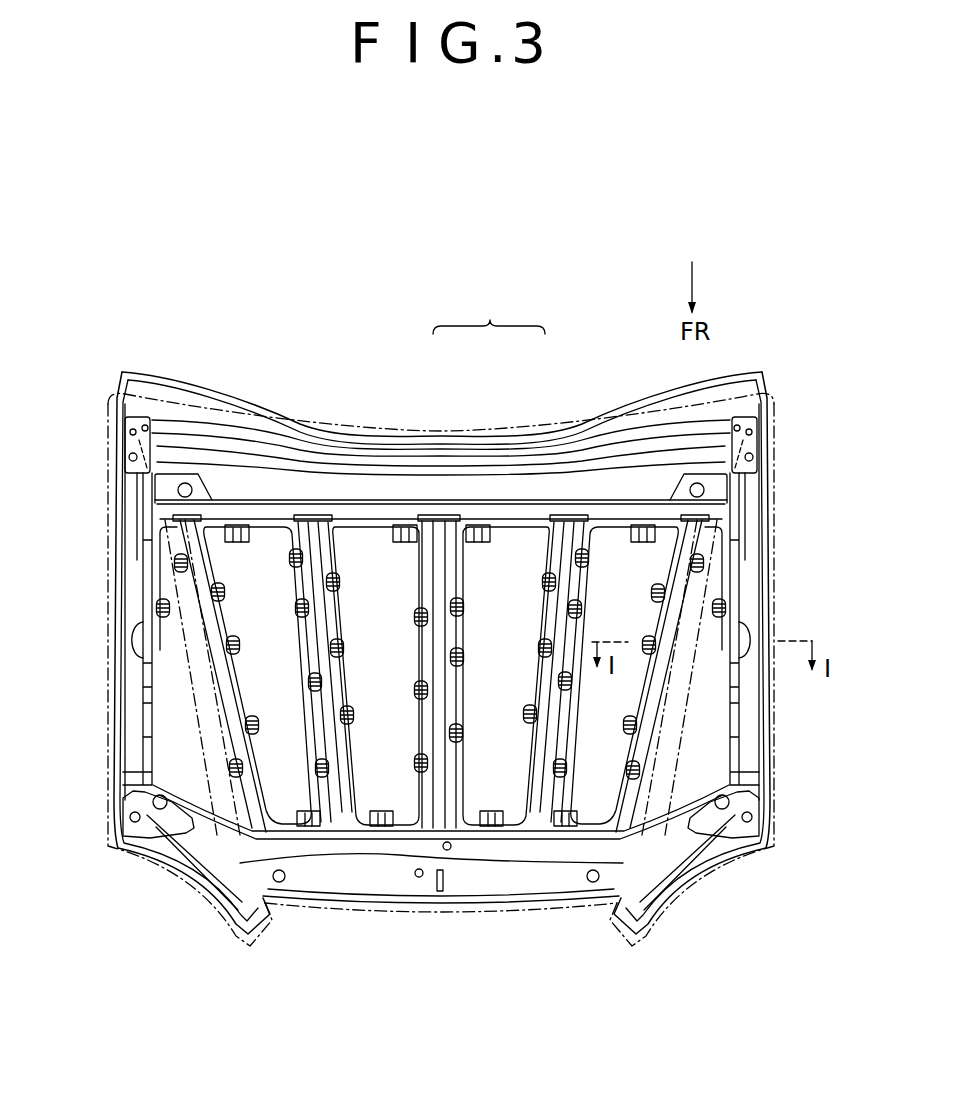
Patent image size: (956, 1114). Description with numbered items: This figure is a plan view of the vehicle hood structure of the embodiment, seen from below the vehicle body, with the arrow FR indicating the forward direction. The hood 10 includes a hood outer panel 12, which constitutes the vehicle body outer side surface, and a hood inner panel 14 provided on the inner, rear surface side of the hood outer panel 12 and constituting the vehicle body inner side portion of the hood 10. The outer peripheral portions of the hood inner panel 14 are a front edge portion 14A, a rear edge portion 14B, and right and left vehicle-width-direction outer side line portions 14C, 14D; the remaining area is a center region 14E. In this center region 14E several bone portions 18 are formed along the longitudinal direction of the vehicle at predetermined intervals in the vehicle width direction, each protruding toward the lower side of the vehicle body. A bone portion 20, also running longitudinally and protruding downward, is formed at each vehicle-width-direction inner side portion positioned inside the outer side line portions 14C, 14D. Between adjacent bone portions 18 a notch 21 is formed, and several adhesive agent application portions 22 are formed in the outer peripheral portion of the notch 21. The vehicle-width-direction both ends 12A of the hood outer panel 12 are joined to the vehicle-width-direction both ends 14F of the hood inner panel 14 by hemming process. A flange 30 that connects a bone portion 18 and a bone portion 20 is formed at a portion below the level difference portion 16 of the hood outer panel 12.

The hood 10 is at (489, 312).
The hood outer panel 12 is at (423, 428).
The vehicle-width-direction both ends of the hood outer panel 12A is at (105, 540).
The hood inner panel 14 is at (498, 431).
The front edge portion 14A is at (371, 885).
The rear edge portion 14B is at (385, 482).
The vehicle-width-direction outer side line portion 14C is at (130, 618).
The vehicle-width-direction outer side line portion 14D is at (745, 590).
The center region 14E is at (515, 557).
The vehicle-width-direction both ends of the hood inner panel 14F is at (112, 589).
The level difference portion 16 is at (185, 715).
The bone portion 18 is at (223, 675).
The bone portion 20 is at (150, 680).
The notch 21 is at (394, 629).
The adhesive agent application portion 22 is at (240, 543).
The flange 30 is at (180, 743).